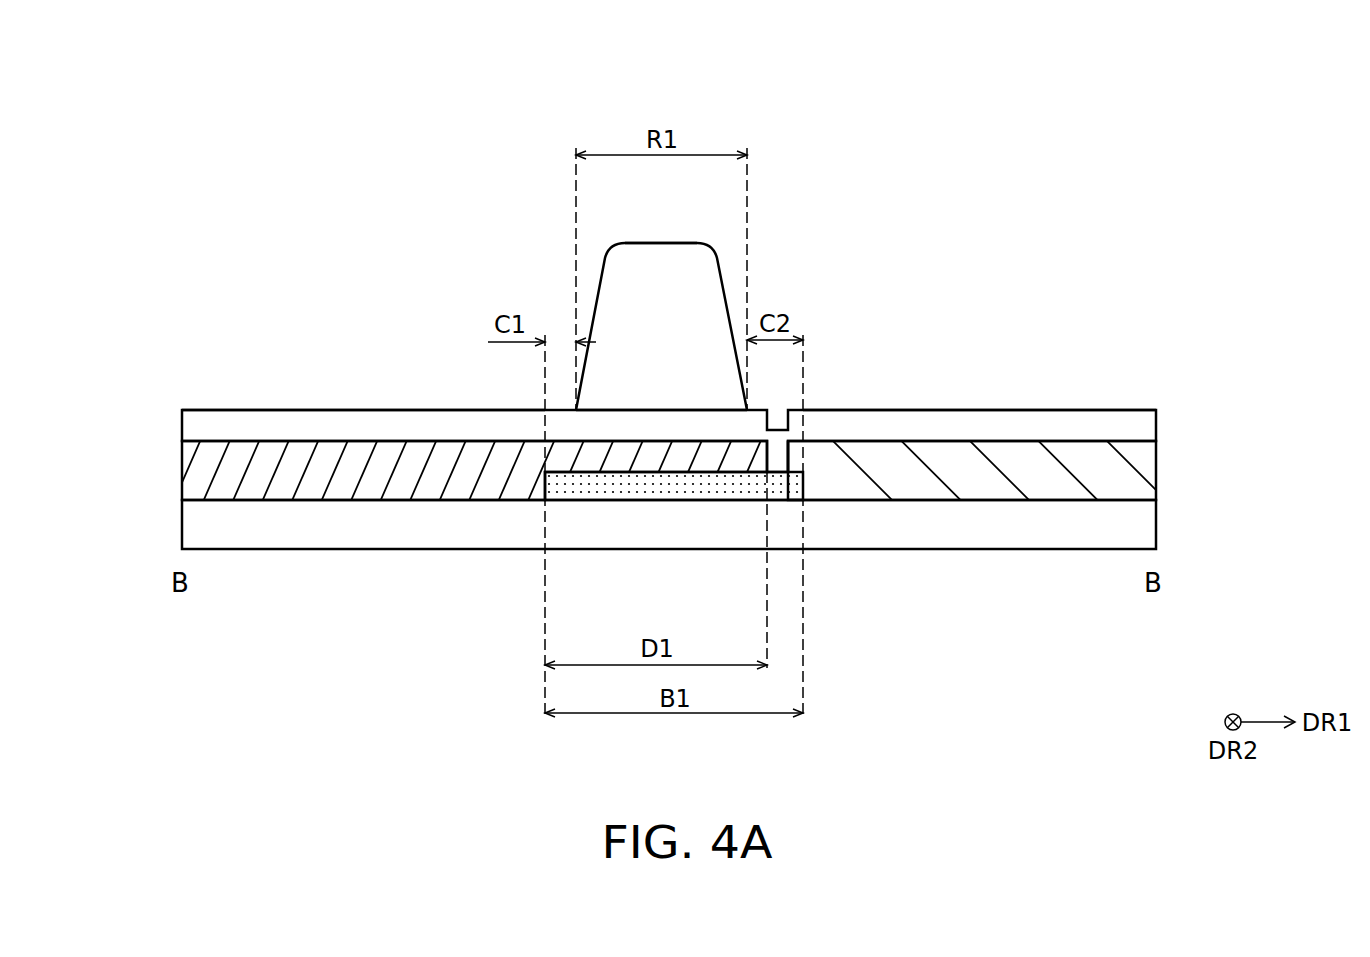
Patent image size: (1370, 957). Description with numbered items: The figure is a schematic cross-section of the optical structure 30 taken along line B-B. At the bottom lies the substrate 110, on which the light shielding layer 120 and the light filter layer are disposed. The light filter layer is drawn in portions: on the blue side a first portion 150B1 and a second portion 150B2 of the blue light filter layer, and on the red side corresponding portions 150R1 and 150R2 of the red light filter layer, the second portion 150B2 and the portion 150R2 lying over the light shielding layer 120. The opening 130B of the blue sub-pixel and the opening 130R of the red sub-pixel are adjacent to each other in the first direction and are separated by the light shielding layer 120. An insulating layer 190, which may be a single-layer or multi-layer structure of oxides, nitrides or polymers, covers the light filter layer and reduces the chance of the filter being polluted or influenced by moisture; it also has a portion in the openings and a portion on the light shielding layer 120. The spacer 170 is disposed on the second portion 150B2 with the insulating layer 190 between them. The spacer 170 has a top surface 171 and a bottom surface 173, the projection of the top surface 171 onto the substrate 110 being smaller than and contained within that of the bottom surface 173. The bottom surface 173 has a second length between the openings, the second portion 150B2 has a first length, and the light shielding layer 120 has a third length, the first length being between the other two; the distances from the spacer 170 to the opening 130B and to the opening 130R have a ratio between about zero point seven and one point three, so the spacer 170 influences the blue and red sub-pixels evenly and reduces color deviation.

The optical structure 30 is at (206, 89).
The substrate 110 is at (205, 520).
The light shielding layer 120 is at (723, 488).
The opening 130B is at (217, 398).
The opening 130R is at (978, 410).
The first blue light-emitting layer portion 150B1 is at (205, 470).
The second portion 150B2 is at (595, 455).
The first red light-emitting layer portion 150R1 is at (1135, 468).
The second red light-emitting layer portion 150R2 is at (797, 458).
The spacer 170 is at (733, 296).
The top surface 171 is at (662, 243).
The bottom surface 173 is at (658, 410).
The insulating layer 190 is at (205, 424).